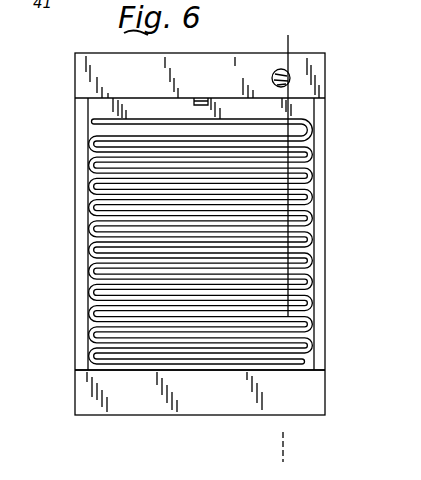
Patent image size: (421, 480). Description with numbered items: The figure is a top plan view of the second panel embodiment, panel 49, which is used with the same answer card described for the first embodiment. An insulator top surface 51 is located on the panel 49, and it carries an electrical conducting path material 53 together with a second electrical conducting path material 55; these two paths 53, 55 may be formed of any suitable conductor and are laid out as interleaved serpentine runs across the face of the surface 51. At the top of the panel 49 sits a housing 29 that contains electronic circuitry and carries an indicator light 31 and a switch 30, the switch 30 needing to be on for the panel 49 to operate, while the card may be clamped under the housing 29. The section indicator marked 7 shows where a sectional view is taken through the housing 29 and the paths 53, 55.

The housing member 29 is at (330, 88).
The switch 30 is at (272, 80).
The indicator light 31 is at (200, 98).
The panel 49 is at (72, 170).
The insulator top surface 51 is at (308, 383).
The electrical conducting path material 53 is at (75, 320).
The second electrical conducting path material 55 is at (318, 290).
The section line 7- 7 is at (262, 42).